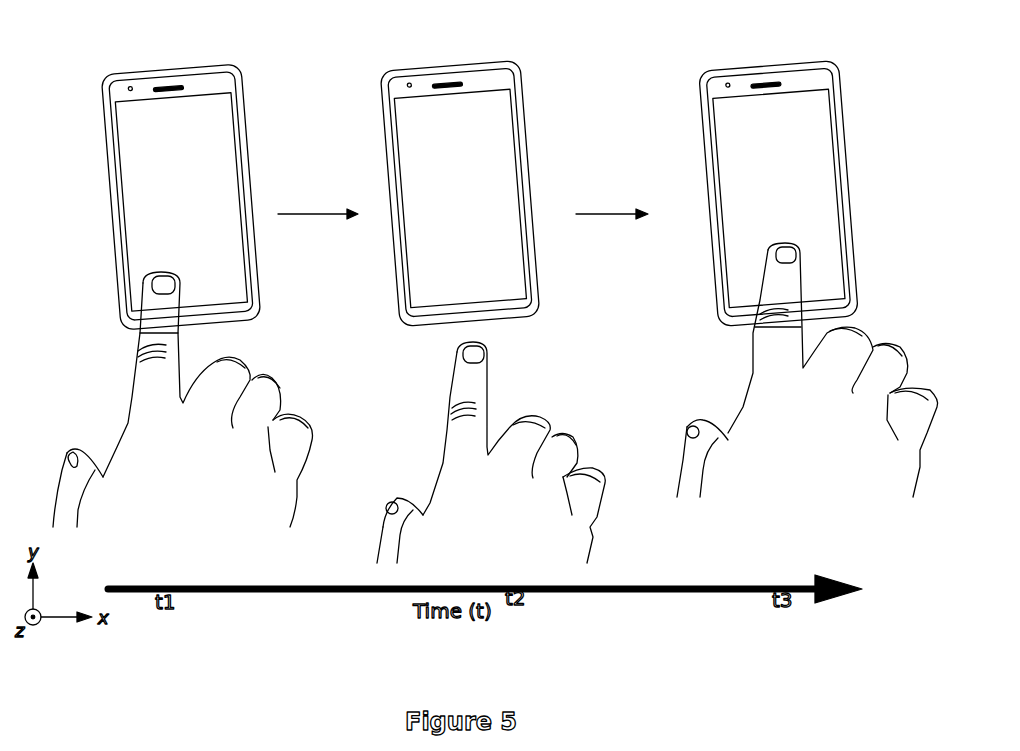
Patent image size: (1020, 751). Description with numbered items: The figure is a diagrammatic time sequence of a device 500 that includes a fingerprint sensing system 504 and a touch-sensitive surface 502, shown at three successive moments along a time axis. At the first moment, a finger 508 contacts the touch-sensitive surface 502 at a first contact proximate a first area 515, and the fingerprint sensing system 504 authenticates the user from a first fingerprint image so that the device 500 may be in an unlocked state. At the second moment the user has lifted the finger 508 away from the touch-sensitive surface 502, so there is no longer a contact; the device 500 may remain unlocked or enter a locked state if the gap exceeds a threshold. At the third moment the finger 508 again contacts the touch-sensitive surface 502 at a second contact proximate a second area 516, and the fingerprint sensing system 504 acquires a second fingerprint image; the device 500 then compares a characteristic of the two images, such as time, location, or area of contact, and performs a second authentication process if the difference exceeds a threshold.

The device 500 is at (209, 48).
The touch-sensitive surface 502 is at (780, 93).
The fingerprint sensing system 504 is at (113, 137).
The finger 508 is at (137, 362).
The first area 515 is at (140, 303).
The second area 516 is at (763, 277).